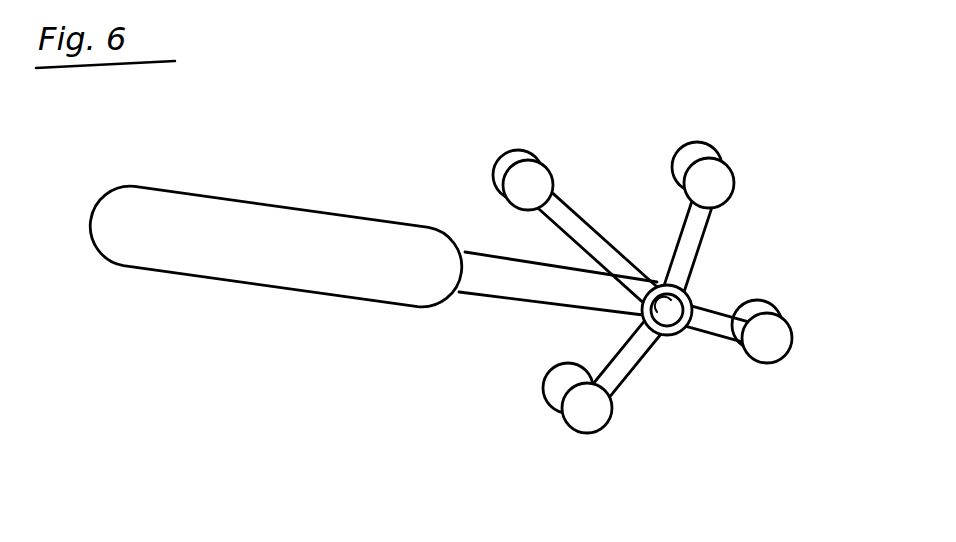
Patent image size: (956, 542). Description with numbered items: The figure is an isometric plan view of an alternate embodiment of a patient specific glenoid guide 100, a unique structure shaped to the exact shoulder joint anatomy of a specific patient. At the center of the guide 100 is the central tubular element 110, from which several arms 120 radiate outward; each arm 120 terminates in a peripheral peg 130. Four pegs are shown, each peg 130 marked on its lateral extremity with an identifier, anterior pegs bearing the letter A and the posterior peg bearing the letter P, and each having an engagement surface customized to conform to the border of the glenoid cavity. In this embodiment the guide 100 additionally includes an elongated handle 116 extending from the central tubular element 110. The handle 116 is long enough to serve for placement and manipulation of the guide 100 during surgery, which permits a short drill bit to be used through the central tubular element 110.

The patient specific glenoid guide 100 is at (795, 178).
The central tubular element 110 is at (676, 336).
The handle 116 is at (275, 289).
The arm 120 is at (570, 200).
The peripheral peg 130 is at (545, 160).